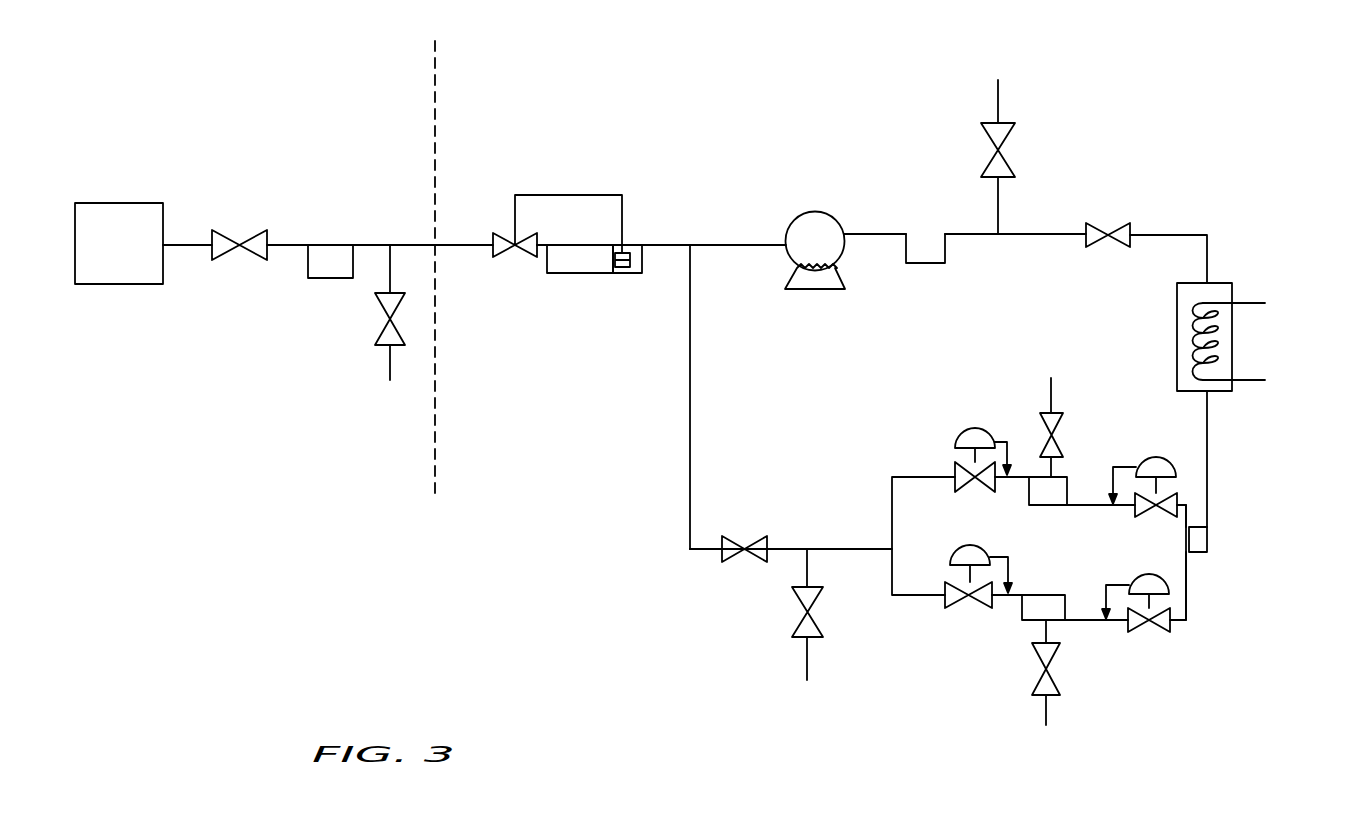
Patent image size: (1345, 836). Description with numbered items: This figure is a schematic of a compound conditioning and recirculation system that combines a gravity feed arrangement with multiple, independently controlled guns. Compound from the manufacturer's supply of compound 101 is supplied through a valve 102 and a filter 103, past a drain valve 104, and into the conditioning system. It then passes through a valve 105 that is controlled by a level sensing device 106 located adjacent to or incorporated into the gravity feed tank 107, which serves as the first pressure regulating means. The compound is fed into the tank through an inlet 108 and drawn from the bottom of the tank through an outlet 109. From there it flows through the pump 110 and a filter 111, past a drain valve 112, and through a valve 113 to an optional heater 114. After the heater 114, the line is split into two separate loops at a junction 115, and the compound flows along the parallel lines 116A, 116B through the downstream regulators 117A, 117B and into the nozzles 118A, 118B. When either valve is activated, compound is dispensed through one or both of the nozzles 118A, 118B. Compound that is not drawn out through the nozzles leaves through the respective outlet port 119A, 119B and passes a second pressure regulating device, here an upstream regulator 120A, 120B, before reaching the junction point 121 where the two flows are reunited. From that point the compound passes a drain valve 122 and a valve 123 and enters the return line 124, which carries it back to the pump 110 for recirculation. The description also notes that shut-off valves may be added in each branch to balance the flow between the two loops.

The manufacturer's supply of compound 101 is at (130, 203).
The valve 102 is at (238, 245).
The filter 103 is at (333, 278).
The drain valve 104 is at (384, 346).
The valve 105 is at (512, 256).
The level sensing device 106 is at (625, 257).
The gravity feed tank 107 is at (600, 273).
The inlet 108 is at (541, 247).
The outlet 109 is at (630, 273).
The pump 110 is at (822, 289).
The filter 111 is at (923, 263).
The drain valve 112 is at (1003, 152).
The valve 113 is at (1112, 228).
The heater 114 is at (1233, 350).
The junction 115 is at (1192, 553).
The parallel line 116A is at (1188, 608).
The parallel line 116B is at (1188, 527).
The downstream regulator 117A is at (1143, 628).
The downstream regulator 117B is at (1172, 458).
The nozzle 118A is at (1042, 678).
The nozzle 118B is at (1057, 432).
The outlet port 119A is at (1017, 598).
The outlet port 119B is at (1023, 477).
The upstream regulator 120A is at (945, 598).
The upstream regulator 120B is at (957, 437).
The junction point 121 is at (873, 547).
The drain valve 122 is at (803, 620).
The valve 123 is at (748, 543).
The return line 124 is at (690, 388).